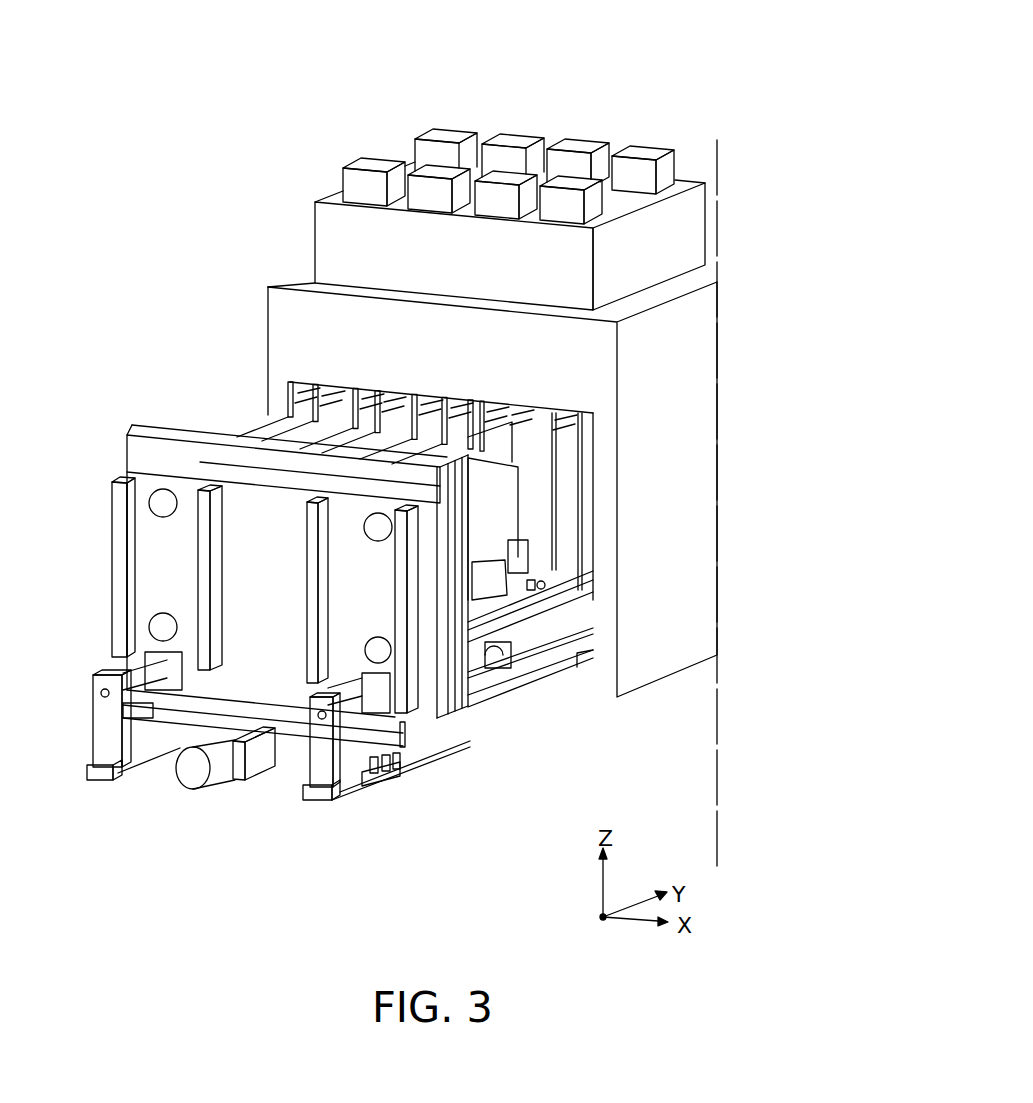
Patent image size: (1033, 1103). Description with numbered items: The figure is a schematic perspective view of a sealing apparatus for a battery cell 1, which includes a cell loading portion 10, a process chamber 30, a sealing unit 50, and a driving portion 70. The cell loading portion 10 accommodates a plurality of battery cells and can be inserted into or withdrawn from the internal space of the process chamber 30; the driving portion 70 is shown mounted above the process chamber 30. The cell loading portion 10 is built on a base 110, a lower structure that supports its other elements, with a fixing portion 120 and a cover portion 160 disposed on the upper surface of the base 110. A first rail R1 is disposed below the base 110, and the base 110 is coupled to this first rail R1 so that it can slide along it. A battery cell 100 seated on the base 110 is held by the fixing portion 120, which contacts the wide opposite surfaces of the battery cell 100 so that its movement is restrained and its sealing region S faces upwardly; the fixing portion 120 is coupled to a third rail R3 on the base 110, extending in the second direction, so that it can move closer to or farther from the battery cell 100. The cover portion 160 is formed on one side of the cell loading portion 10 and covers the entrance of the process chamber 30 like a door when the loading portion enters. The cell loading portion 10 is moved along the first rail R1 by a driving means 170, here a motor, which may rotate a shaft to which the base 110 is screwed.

The sealing apparatus for a battery cell 1 is at (326, 34).
The cell loading portion 10 is at (157, 411).
The process chamber 30 is at (300, 312).
The sealing unit 50 is at (287, 405).
The driving portion 70 is at (332, 230).
The battery cell 100 is at (240, 411).
The base 110 is at (538, 608).
The fixing portion 120 is at (495, 520).
The cover portion 160 is at (445, 682).
The driving means 170 is at (188, 768).
The sealing region S is at (473, 447).
The first rail R1 is at (493, 650).
The third rail R3 is at (483, 603).